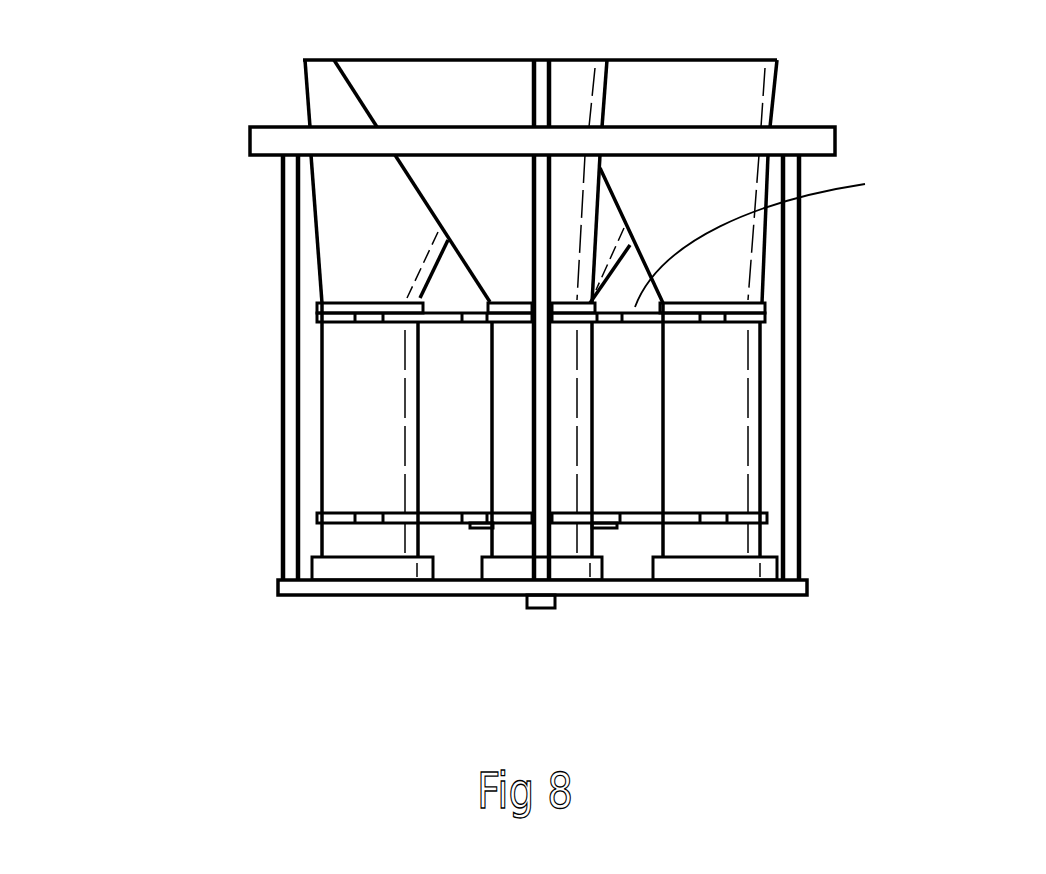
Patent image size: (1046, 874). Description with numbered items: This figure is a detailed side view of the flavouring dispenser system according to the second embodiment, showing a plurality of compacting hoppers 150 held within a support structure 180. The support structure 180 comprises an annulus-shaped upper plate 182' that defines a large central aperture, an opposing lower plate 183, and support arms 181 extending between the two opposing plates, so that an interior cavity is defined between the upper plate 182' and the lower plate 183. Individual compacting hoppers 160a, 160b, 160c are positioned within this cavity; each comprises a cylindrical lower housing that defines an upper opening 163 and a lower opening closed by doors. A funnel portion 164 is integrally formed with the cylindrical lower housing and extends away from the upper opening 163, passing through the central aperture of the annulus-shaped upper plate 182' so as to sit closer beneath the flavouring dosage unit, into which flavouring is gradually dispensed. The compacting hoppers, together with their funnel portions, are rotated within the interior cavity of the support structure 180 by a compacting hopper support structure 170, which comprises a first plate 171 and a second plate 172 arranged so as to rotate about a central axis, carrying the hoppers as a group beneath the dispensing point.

The compacting hopper 150 is at (597, 433).
The compacting hopper 160a is at (753, 437).
The compacting hopper 160b is at (595, 347).
The compacting hopper 160c is at (353, 473).
The upper opening 163 is at (730, 303).
The funnel portion 164 is at (707, 117).
The compacting hopper support structure 170 is at (460, 500).
The first plate 171 is at (387, 523).
The second plate 172 is at (440, 323).
The support structure 180 is at (491, 383).
The support arm 181 is at (290, 288).
The upper plate 182' is at (493, 108).
The lower plate 183 is at (305, 597).